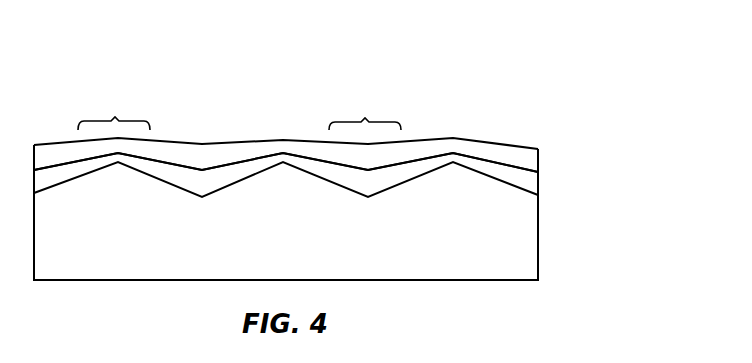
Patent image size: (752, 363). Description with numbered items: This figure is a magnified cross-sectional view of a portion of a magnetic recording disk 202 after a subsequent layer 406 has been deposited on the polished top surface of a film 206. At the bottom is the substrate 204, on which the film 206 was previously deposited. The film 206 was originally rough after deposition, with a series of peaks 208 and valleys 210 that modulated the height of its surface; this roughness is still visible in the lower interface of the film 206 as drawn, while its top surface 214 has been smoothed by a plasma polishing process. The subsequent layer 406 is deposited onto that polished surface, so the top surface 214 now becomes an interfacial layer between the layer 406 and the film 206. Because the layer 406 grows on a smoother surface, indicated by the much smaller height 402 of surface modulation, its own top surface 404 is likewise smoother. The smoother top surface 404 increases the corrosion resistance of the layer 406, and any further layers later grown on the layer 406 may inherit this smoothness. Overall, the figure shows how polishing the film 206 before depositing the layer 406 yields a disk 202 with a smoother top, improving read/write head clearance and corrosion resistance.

The disk 202 is at (270, 50).
The substrate 204 is at (527, 251).
The film 206 is at (532, 185).
The peaks 208 is at (114, 110).
The valleys 210 is at (365, 110).
The top surface 214 is at (532, 158).
The height 402 is at (361, 125).
The top surface 404 is at (486, 126).
The subsequent layer 406 is at (507, 152).